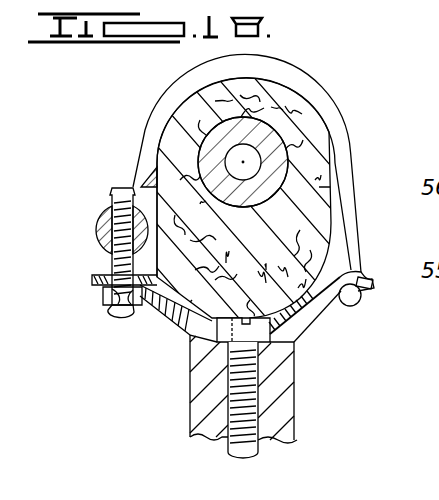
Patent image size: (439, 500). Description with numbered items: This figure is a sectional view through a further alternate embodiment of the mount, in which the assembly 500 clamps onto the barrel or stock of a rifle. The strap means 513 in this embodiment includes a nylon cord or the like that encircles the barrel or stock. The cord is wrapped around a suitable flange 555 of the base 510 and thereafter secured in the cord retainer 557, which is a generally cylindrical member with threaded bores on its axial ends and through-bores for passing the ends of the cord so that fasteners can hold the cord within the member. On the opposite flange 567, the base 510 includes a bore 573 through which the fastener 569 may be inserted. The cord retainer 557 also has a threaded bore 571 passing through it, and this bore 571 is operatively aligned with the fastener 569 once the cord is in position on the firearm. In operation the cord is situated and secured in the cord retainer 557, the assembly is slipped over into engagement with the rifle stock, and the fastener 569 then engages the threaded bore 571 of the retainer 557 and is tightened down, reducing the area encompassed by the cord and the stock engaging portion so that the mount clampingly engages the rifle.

The engine mount assembly 500 is at (137, 100).
The strap means 513 is at (318, 81).
The base 510 is at (190, 398).
The fastener 569 is at (135, 312).
The flange 555 is at (366, 283).
The cord retainer 557 is at (111, 192).
The threaded bore 571 is at (117, 225).
The opposite flange 567 is at (94, 279).
The bore 573 is at (132, 310).